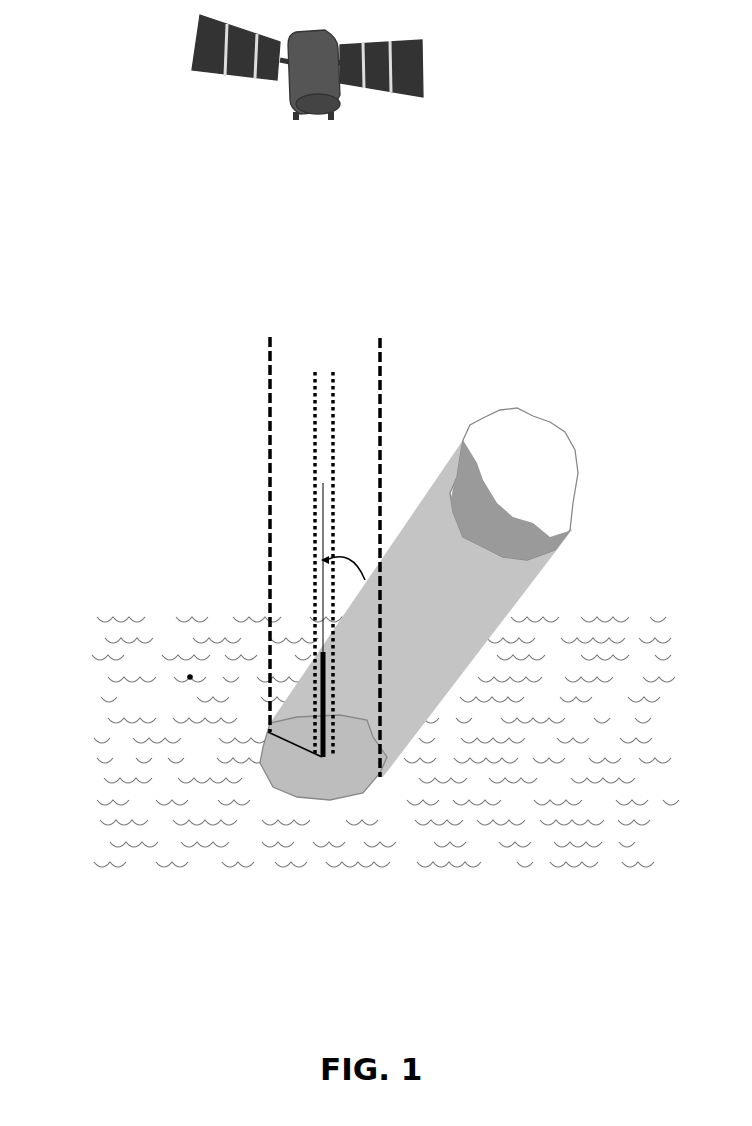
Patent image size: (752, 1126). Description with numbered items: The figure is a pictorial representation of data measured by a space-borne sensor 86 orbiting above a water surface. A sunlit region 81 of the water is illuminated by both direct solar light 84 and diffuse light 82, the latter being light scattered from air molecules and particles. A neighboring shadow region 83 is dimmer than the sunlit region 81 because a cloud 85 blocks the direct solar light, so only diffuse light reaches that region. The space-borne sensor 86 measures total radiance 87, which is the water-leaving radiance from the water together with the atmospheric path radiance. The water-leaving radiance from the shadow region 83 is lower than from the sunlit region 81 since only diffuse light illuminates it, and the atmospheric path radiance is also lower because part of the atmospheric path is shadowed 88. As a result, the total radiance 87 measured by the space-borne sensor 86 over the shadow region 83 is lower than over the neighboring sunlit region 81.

The sunlit region 81 is at (150, 718).
The diffuse light 82 is at (190, 674).
The shadow region 83 is at (293, 766).
The direct solar light 84 is at (155, 652).
The cloud 85 is at (552, 440).
The space-borne sensor 86 is at (210, 60).
The total radiance 87 is at (332, 296).
The shadowed atmospheric path 88 is at (325, 693).